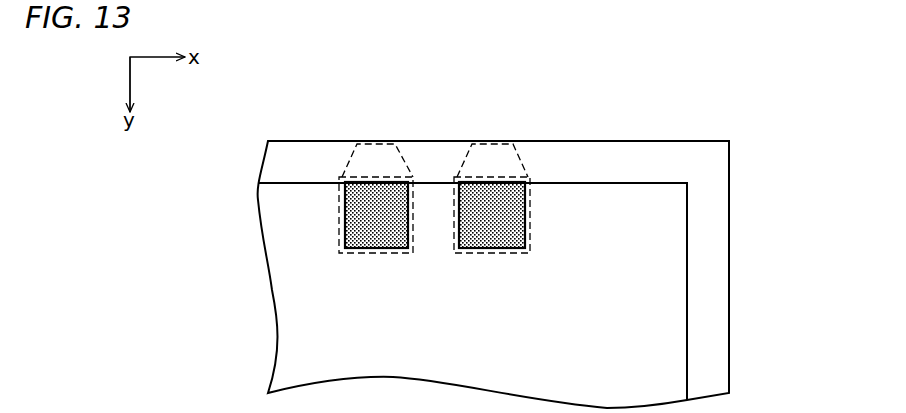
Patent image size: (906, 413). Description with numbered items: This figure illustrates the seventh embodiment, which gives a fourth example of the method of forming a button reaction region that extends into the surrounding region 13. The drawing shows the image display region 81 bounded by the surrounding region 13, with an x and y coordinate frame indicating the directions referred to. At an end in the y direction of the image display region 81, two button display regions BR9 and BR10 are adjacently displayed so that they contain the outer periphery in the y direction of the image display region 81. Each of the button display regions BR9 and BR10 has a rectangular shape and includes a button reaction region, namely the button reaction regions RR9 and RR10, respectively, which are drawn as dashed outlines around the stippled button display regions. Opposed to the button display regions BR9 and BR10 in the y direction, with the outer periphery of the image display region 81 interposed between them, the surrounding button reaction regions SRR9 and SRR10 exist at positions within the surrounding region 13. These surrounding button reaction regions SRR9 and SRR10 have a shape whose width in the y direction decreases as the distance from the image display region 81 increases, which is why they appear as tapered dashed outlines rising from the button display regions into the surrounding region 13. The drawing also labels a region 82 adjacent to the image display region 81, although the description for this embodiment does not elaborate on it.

The surrounding region 13 is at (642, 166).
The image display region 81 is at (690, 270).
The peripheral region 82 is at (732, 208).
The button display region BR9 is at (357, 231).
The button reaction region RR9 is at (340, 221).
The surrounding button reaction region SRR9 is at (403, 165).
The button display region BR10 is at (508, 231).
The button reaction region RR10 is at (454, 221).
The surrounding button reaction region SRR10 is at (522, 164).